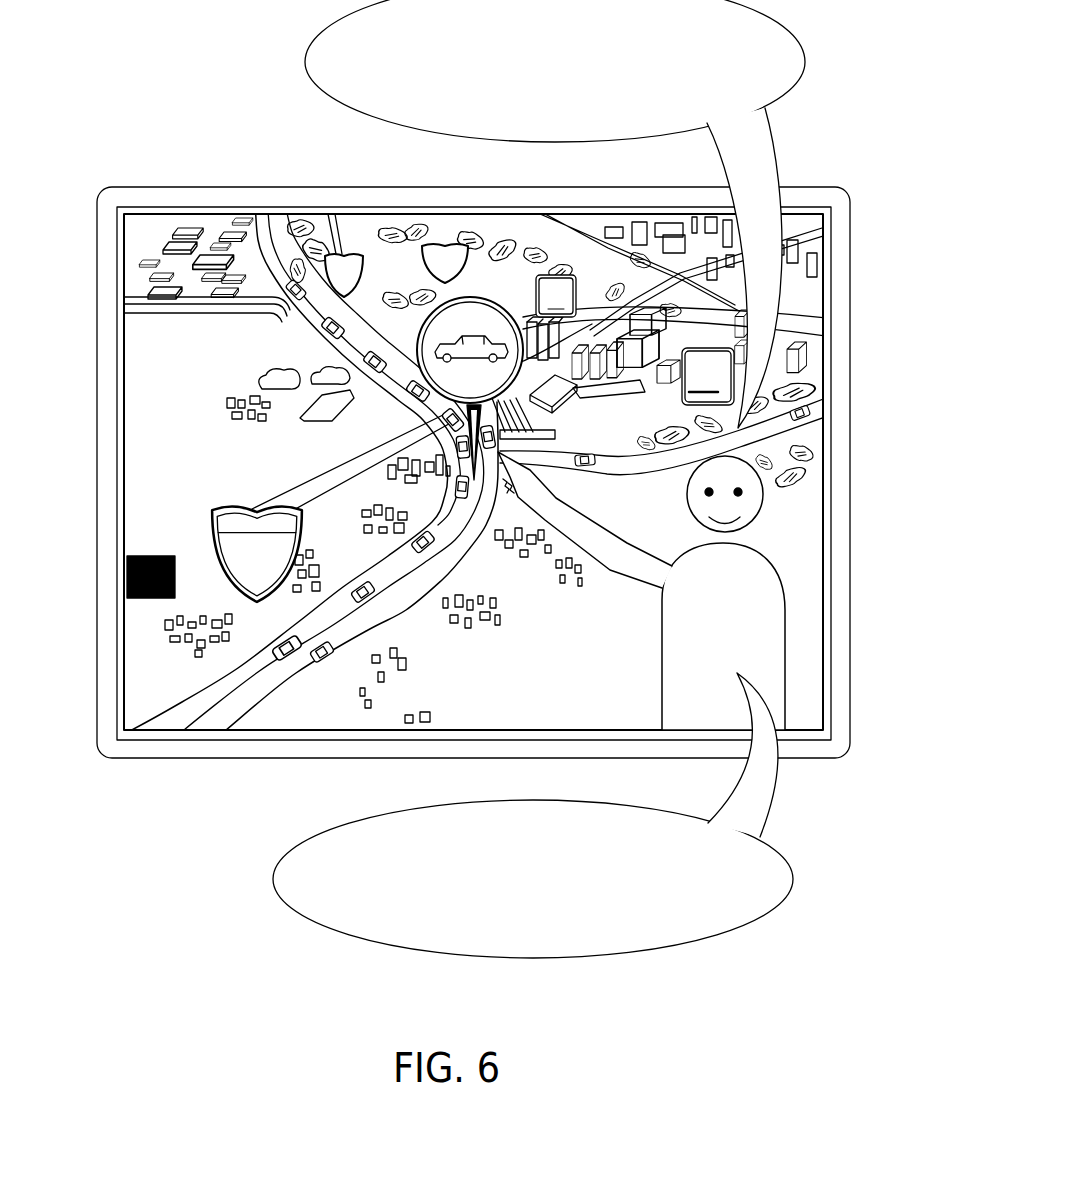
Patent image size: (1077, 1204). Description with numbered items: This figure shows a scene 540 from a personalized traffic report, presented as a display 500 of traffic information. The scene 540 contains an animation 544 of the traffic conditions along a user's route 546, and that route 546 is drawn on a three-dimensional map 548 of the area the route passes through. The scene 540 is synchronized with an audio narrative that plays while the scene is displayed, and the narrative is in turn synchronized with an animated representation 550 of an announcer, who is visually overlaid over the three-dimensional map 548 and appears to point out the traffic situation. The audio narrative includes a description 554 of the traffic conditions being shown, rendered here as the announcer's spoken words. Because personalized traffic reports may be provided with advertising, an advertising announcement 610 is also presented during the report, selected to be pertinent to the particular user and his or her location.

The display screen showing traffic report 500 is at (160, 128).
The scene 540 is at (158, 362).
The animation 544 is at (393, 557).
The user's route 546 is at (303, 618).
The 3D map 548 is at (345, 243).
The animated representation of the announcer 550 is at (710, 703).
The description of the traffic conditions 554 is at (307, 62).
The advertising announcement 610 is at (272, 868).